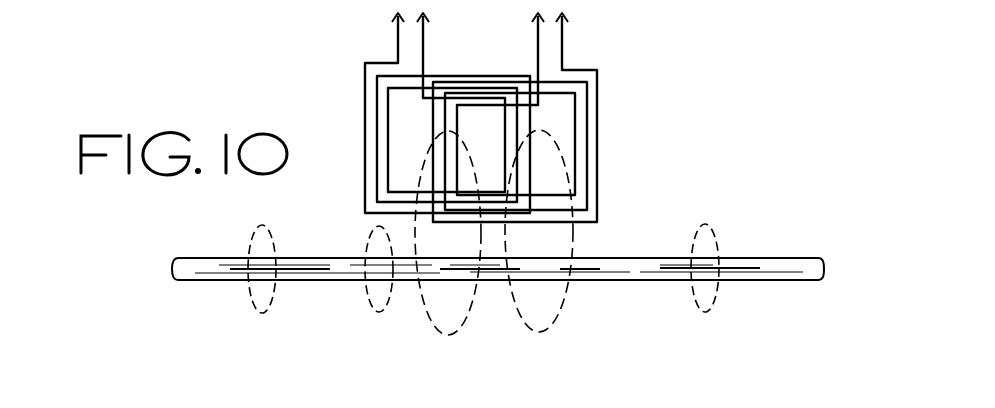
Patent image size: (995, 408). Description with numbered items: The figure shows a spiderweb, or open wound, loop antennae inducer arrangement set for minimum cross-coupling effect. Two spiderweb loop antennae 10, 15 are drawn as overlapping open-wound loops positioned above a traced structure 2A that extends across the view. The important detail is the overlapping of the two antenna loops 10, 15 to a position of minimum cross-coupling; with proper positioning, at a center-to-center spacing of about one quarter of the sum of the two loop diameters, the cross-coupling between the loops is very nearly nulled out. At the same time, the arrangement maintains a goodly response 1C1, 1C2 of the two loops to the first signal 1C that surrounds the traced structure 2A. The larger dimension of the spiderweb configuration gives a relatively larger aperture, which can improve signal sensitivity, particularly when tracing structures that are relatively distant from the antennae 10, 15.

The spiderweb loop antenna 10 is at (362, 117).
The spiderweb loop antenna 15 is at (590, 138).
The traced structure 2A is at (768, 259).
The first signal 1C is at (248, 235).
The response of first loop 1C1 is at (432, 333).
The response of second loop 1C2 is at (562, 237).